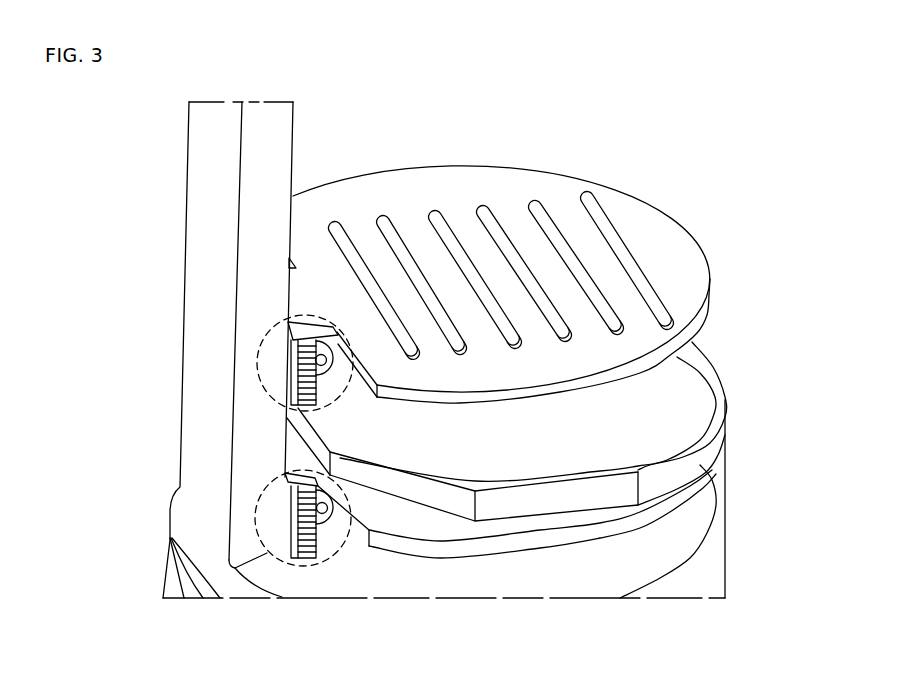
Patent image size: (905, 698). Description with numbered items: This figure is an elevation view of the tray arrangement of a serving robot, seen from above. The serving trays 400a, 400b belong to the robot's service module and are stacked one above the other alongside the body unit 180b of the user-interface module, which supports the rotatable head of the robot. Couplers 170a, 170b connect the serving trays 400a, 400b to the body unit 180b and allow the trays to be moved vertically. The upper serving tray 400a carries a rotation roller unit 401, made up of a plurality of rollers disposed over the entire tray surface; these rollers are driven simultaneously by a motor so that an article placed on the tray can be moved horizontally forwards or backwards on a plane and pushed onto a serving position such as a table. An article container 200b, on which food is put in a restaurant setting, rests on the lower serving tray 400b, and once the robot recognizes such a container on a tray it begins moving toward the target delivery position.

The body unit 180b is at (217, 192).
The coupler 170a is at (257, 370).
The coupler 170b is at (266, 530).
The rotation roller unit 401 is at (599, 218).
The serving tray 400a is at (525, 263).
The article container 200b is at (710, 442).
The serving tray 400b is at (633, 512).